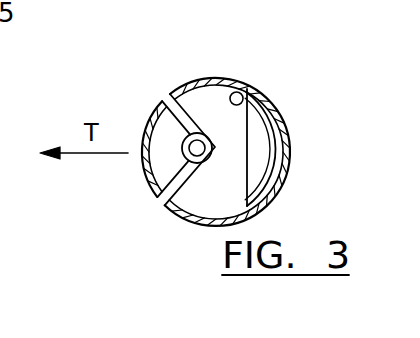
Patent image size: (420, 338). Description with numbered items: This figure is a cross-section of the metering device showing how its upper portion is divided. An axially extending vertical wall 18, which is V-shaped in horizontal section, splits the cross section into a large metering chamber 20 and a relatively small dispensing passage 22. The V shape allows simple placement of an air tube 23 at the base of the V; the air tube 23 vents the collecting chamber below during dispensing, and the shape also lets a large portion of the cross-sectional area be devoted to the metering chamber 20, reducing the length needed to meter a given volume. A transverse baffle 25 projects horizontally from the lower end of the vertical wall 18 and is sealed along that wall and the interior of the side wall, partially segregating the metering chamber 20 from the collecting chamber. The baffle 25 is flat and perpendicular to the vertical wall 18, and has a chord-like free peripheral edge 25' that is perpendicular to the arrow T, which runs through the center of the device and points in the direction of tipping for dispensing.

The vertical wall 18 is at (181, 91).
The metering chamber 20 is at (272, 153).
The dispensing passage 22 is at (180, 130).
The air tube 23 is at (189, 152).
The transverse baffle 25 is at (226, 147).
The free peripheral edge 25' is at (278, 80).